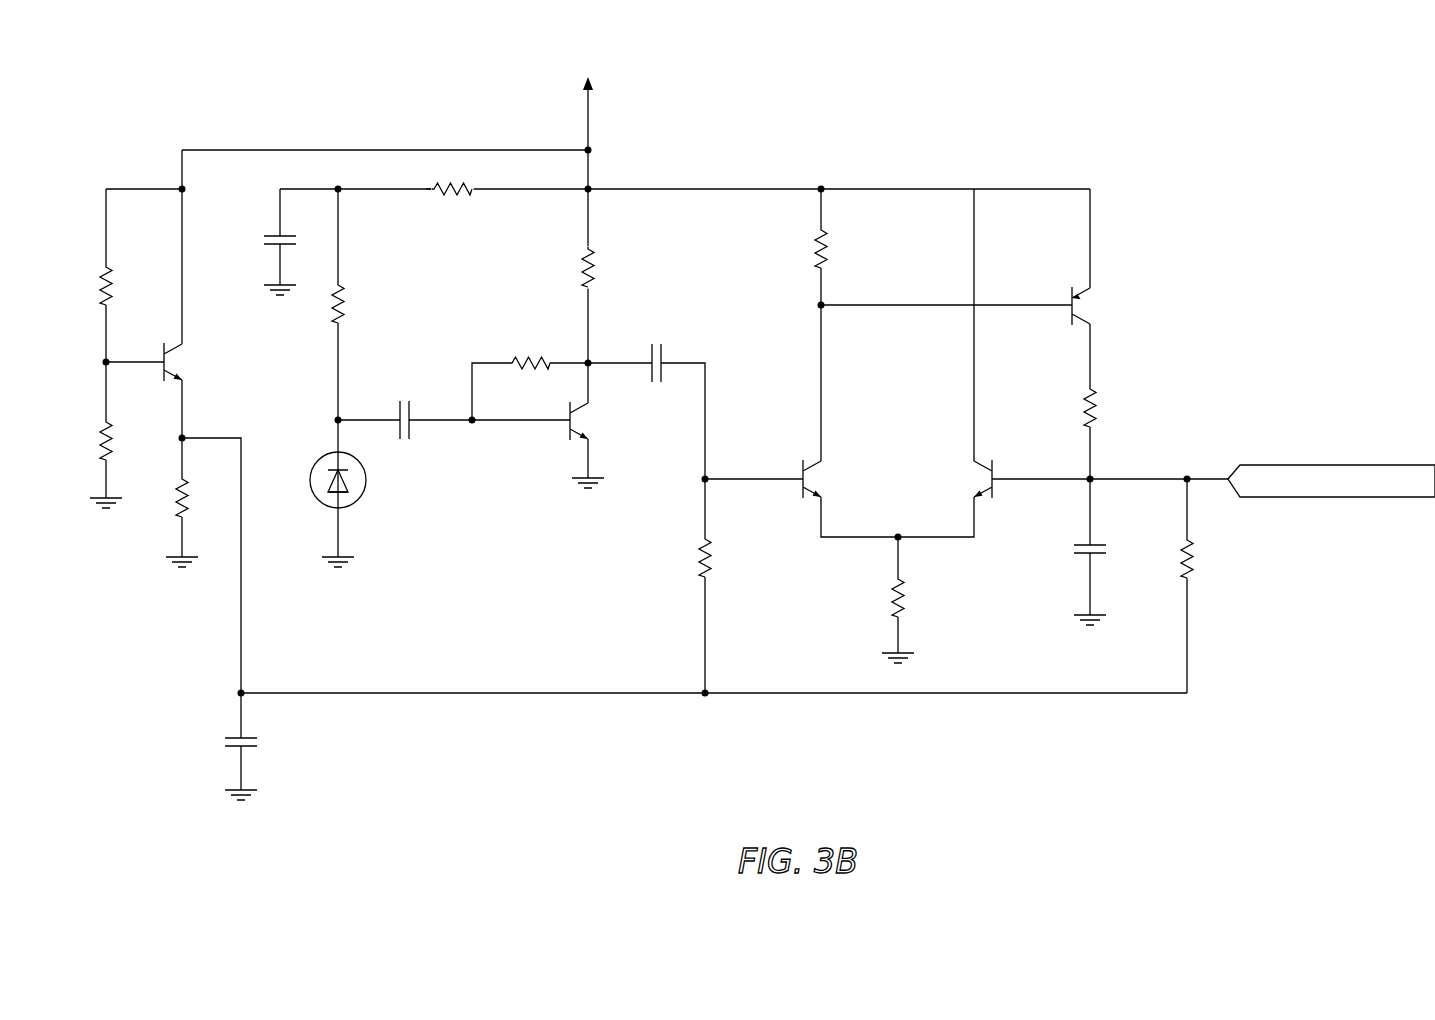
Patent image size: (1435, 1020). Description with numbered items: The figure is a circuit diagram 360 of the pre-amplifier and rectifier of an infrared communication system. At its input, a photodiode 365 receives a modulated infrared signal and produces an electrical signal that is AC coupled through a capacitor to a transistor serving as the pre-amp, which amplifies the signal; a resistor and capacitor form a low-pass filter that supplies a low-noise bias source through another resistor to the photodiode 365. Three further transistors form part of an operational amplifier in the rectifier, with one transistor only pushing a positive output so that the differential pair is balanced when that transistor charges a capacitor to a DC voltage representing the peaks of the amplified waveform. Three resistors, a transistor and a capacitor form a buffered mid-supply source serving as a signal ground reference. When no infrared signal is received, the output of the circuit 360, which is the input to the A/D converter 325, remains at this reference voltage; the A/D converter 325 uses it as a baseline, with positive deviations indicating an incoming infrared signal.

The circuit diagram 360 is at (1084, 92).
The photodiode 365 is at (362, 494).
The A/D converter 325 is at (1334, 498).